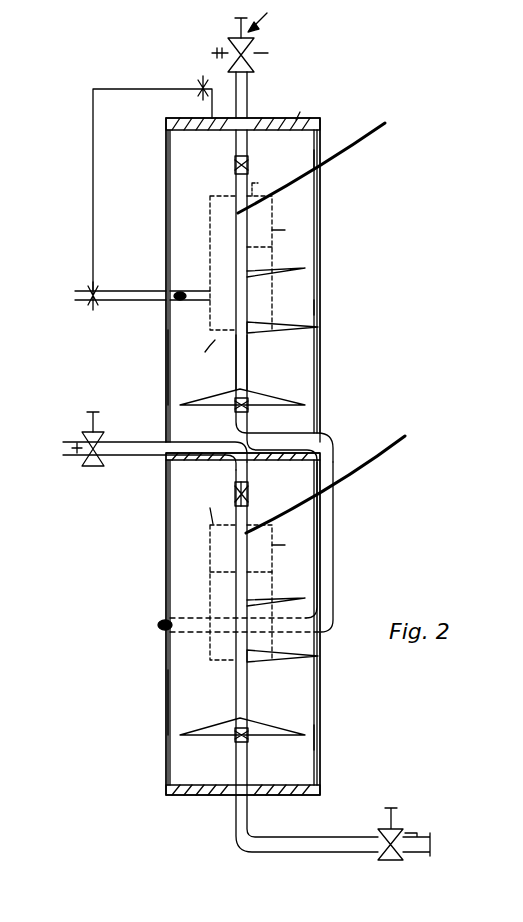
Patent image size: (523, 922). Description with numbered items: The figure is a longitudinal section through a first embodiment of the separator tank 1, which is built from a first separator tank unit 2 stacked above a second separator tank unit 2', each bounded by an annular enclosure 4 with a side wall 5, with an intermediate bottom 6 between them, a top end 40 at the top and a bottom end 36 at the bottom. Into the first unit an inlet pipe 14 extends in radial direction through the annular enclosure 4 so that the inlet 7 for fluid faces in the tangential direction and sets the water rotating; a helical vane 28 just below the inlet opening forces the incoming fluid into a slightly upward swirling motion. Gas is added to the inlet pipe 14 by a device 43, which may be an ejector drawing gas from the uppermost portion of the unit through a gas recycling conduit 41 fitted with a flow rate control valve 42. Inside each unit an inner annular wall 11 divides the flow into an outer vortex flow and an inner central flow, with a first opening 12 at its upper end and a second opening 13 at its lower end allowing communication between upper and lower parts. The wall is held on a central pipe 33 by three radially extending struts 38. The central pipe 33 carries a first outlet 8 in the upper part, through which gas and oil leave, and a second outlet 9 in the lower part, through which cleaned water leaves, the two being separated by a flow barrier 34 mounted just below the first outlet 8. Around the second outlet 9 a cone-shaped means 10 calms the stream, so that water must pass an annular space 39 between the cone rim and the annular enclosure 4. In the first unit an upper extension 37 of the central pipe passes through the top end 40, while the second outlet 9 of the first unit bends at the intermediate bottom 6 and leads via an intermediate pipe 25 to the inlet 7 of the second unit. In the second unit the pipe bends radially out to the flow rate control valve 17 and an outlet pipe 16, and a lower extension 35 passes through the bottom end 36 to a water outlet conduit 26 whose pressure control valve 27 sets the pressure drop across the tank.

The separator tank 1 is at (338, 101).
The first separator tank unit 2 is at (279, 280).
The second separator tank unit 2' is at (193, 624).
The annular enclosure 4 is at (313, 160).
The vessel side wall 5 is at (334, 307).
The intermediate bottom 6 is at (258, 462).
The inlet for fluid 7 is at (178, 291).
The first outlet 8 is at (234, 165).
The second outlet 9 is at (250, 407).
The means for calming the stream 10 is at (257, 403).
The inner annular wall 11 is at (280, 231).
The first opening 12 is at (242, 348).
The second opening 13 is at (193, 532).
The inlet pipe 14 is at (80, 288).
The outlet pipe 16 is at (58, 480).
The flow rate control valve 17 is at (85, 432).
The intermediate pipe 25 is at (335, 509).
The water outlet conduit 26 is at (424, 836).
The pressure control valve 27 is at (393, 820).
The helical vane 28 is at (194, 346).
The central pipe 33 is at (249, 350).
The flow barrier 34 is at (337, 319).
The lower extension 35 is at (234, 815).
The bottom end 36 is at (268, 797).
The upper extension 37 is at (250, 93).
The struts 38 is at (232, 247).
The annular space 39 is at (320, 737).
The top end 40 is at (297, 118).
The gas recycling conduit 41 is at (107, 88).
The flow rate control valve 42 is at (200, 78).
The device for adding gas 43 is at (95, 310).